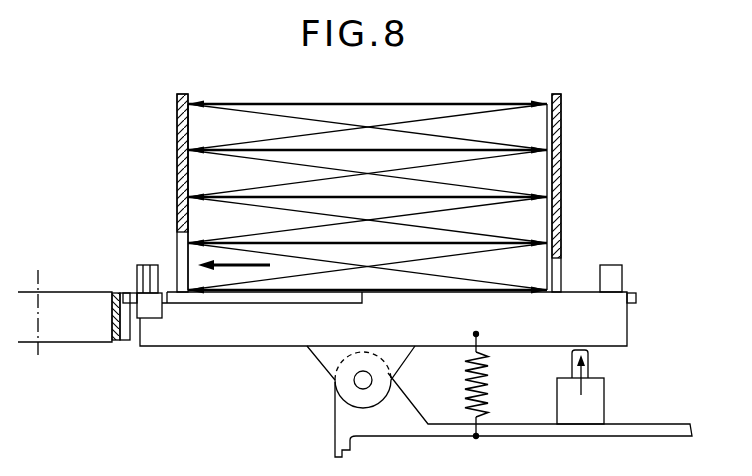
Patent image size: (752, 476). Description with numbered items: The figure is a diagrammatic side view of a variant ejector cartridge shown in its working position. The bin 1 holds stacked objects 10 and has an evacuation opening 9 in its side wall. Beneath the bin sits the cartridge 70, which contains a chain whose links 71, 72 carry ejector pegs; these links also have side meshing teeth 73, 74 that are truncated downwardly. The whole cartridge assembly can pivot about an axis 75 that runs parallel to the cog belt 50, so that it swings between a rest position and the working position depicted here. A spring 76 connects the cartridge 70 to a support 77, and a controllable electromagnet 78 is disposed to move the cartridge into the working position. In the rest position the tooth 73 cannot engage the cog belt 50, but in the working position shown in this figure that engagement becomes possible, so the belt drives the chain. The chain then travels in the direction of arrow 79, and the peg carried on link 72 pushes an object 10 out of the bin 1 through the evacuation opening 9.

The bin 1 is at (561, 155).
The evacuation opening 9 is at (180, 243).
The object 10 is at (298, 158).
The arrow 79 is at (243, 262).
The cartridge 70 is at (638, 336).
The cog belt 50 is at (118, 340).
The side meshing tooth 73 is at (125, 292).
The link 71 is at (153, 265).
The link 72 is at (609, 272).
The side meshing tooth 74 is at (635, 297).
The axis 75 is at (363, 380).
The spring 76 is at (490, 380).
The support 77 is at (388, 408).
The controllable electromagnet 78 is at (597, 388).